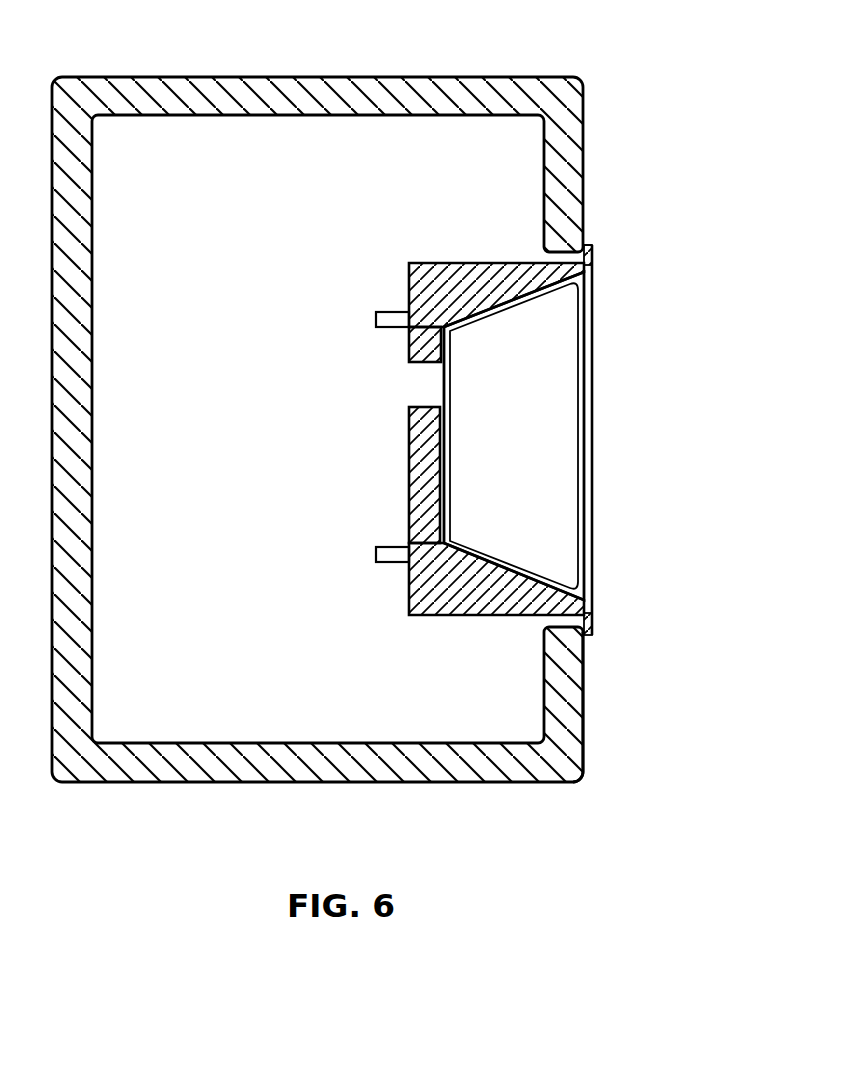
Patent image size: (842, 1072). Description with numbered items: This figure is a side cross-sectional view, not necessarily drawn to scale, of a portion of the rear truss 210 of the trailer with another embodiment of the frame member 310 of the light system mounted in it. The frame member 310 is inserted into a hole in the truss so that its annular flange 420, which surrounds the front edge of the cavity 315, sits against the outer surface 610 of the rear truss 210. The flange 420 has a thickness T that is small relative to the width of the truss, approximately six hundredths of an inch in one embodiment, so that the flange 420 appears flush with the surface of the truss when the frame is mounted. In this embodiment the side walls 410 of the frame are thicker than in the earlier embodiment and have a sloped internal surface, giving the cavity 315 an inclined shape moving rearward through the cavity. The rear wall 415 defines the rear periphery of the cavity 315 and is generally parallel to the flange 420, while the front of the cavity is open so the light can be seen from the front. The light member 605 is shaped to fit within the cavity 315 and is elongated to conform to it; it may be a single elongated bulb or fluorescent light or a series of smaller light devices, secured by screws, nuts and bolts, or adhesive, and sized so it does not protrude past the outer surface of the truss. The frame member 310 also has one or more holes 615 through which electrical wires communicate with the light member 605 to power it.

The rear truss 210 is at (403, 90).
The outer surface 610 is at (583, 740).
The side wall 410 is at (455, 272).
The holes 615 is at (423, 366).
The rear wall 415 is at (407, 477).
The light member 605 is at (567, 393).
The flange 420 is at (590, 258).
The thickness T is at (585, 243).
The cavity 315 is at (600, 550).
The frame member 310 is at (352, 338).